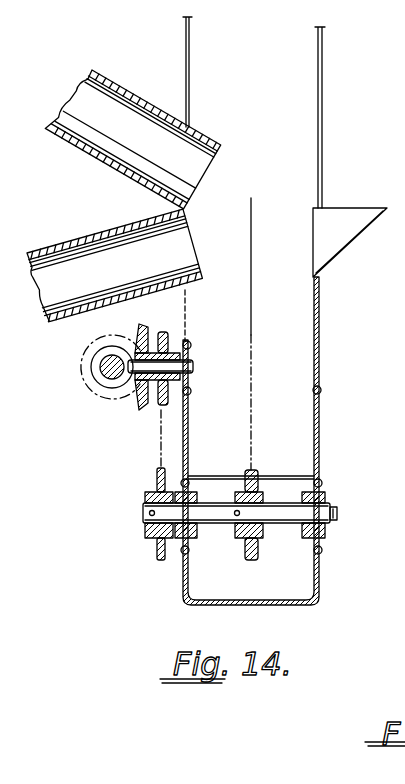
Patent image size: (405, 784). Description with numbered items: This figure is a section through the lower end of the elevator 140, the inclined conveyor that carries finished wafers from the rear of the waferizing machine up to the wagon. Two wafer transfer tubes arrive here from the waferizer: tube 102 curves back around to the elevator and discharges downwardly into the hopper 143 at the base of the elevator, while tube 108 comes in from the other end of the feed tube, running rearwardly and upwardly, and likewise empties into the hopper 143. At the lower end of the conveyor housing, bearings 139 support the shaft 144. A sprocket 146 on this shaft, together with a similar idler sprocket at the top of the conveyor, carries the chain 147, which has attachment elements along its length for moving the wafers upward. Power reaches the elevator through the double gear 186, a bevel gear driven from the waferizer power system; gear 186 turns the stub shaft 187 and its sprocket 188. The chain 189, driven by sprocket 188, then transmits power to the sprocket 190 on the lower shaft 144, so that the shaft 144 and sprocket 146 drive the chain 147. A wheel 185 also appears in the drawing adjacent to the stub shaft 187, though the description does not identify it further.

The wafer transfer tube 102 is at (156, 70).
The wafer transfer tube 108 is at (107, 229).
The elevator 140 is at (328, 146).
The hopper 143 is at (358, 238).
The chain 147 is at (253, 337).
The wheel 185 is at (95, 391).
The stub shaft 187 is at (192, 367).
The double gear 186 is at (137, 410).
The sprocket 188 is at (160, 406).
The chain 189 is at (158, 456).
The sprocket 190 is at (155, 545).
The bearings 139 is at (323, 540).
The sprockets 146 is at (258, 477).
The shaft 144 is at (338, 506).